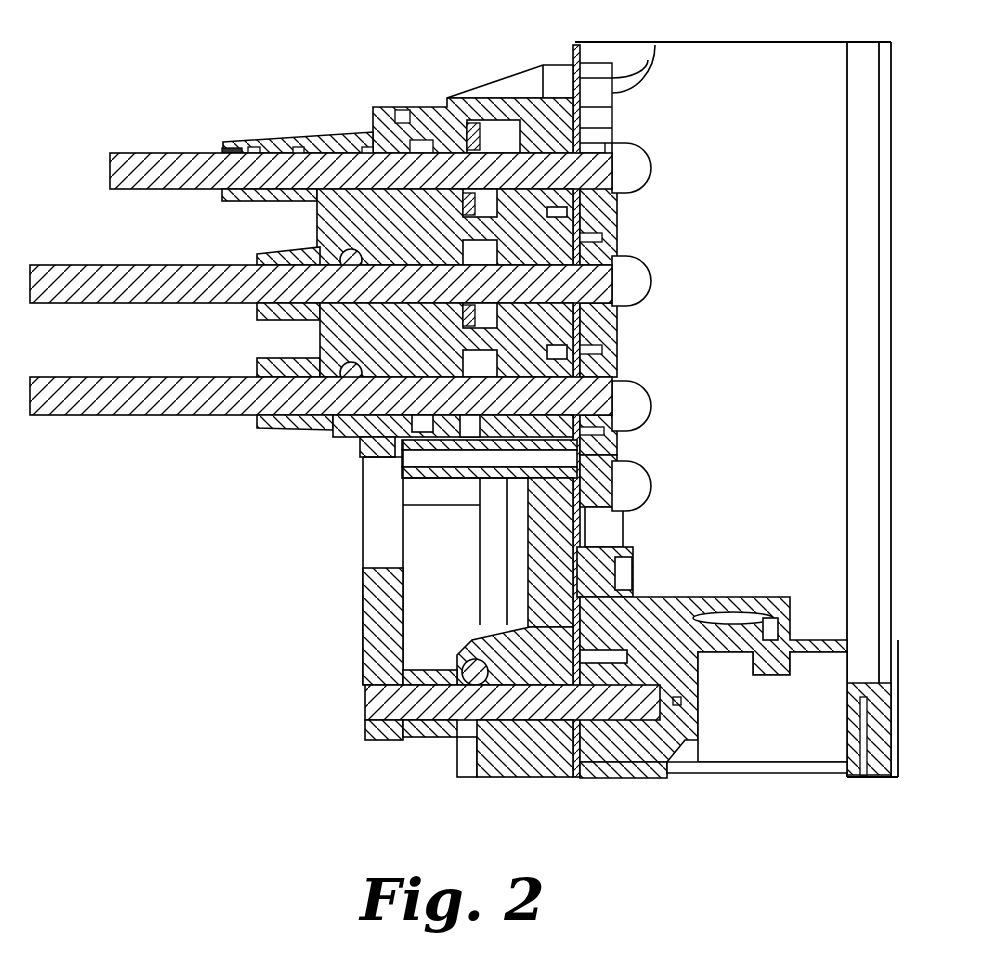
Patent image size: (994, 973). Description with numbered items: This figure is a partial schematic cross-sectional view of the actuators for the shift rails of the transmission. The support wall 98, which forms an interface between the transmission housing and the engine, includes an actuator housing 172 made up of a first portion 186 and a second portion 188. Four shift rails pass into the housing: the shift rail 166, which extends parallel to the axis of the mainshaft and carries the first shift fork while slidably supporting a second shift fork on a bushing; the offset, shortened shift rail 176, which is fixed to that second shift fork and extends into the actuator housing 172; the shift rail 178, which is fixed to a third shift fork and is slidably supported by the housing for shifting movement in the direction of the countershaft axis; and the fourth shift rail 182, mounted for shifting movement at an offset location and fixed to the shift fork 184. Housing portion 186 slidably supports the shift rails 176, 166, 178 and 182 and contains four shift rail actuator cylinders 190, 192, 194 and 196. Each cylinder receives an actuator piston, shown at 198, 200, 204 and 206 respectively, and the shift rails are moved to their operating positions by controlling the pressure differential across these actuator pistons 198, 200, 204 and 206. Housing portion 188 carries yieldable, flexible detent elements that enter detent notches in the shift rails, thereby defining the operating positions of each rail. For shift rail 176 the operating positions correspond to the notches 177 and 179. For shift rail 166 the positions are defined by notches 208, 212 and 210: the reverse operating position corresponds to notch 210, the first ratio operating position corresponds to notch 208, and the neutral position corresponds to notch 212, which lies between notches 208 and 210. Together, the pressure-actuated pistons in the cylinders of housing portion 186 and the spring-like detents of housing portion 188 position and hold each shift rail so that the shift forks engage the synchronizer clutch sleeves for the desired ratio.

The support wall 98 is at (727, 597).
The shift rail 166 is at (185, 288).
The actuator housing 172 is at (498, 70).
The shift rail 176 is at (182, 172).
The notch 177 is at (300, 150).
The shift rail 178 is at (185, 402).
The notch 179 is at (340, 146).
The fourth shift rail 182 is at (440, 714).
The shift fork 184 is at (383, 638).
The first portion of actuator housing 186 is at (463, 110).
The second portion of actuator housing 188 is at (305, 148).
The shift rail actuator cylinder 190 is at (575, 190).
The shift rail actuator cylinder 192 is at (540, 298).
The shift rail actuator cylinder 194 is at (547, 412).
The shift rail actuator cylinder 196 is at (587, 773).
The actuator piston 198 is at (455, 108).
The actuator piston 200 is at (380, 308).
The actuator piston 204 is at (410, 468).
The actuator piston 206 is at (590, 663).
The notch 208 is at (335, 262).
The notch 210 is at (253, 153).
The notch 212 is at (226, 152).